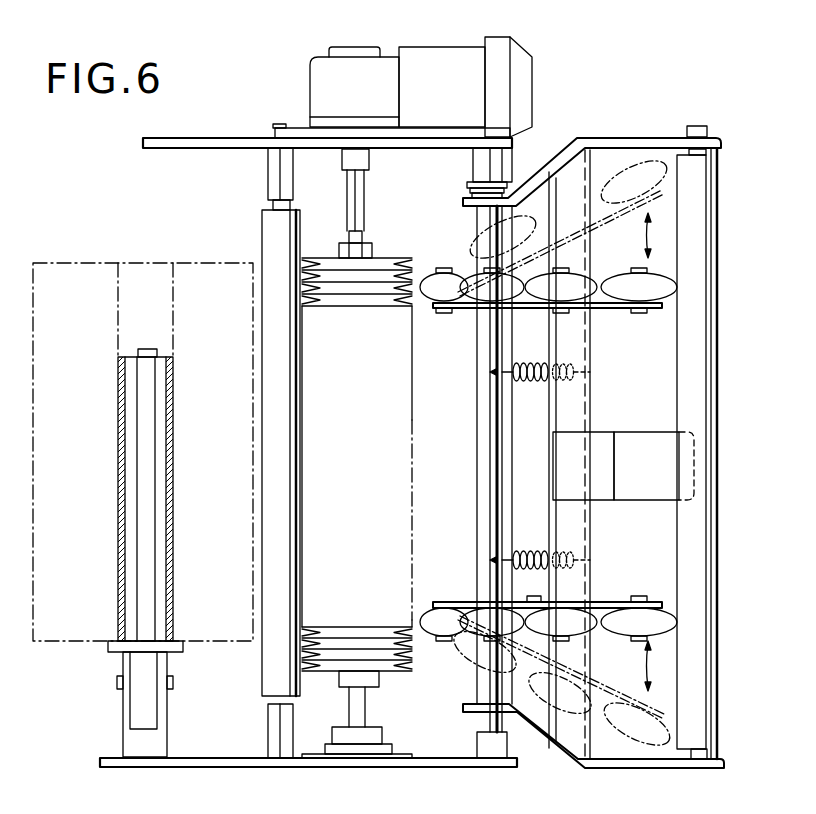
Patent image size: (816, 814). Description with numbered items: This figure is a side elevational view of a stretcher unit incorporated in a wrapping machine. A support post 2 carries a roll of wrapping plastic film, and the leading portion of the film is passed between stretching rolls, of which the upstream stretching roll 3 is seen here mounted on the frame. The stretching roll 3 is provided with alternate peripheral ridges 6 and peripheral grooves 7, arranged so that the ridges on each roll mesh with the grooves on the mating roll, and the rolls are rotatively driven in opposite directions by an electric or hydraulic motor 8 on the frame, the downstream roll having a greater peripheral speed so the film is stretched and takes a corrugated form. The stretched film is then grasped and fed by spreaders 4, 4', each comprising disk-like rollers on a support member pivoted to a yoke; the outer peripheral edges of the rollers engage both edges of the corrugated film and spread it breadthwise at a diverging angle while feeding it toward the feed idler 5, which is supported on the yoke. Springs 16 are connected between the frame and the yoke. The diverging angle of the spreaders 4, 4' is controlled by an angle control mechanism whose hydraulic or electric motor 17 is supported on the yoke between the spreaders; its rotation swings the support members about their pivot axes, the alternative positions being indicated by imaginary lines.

The support post 2 is at (123, 432).
The stretching roll 3 is at (320, 254).
The spreader 4 is at (592, 232).
The spreader 4' is at (588, 675).
The feed idler 5 is at (707, 377).
The peripheral ridge 6 is at (403, 660).
The peripheral groove 7 is at (404, 646).
The motor 8 is at (452, 70).
The spring 16 is at (531, 385).
The motor 17 is at (639, 446).